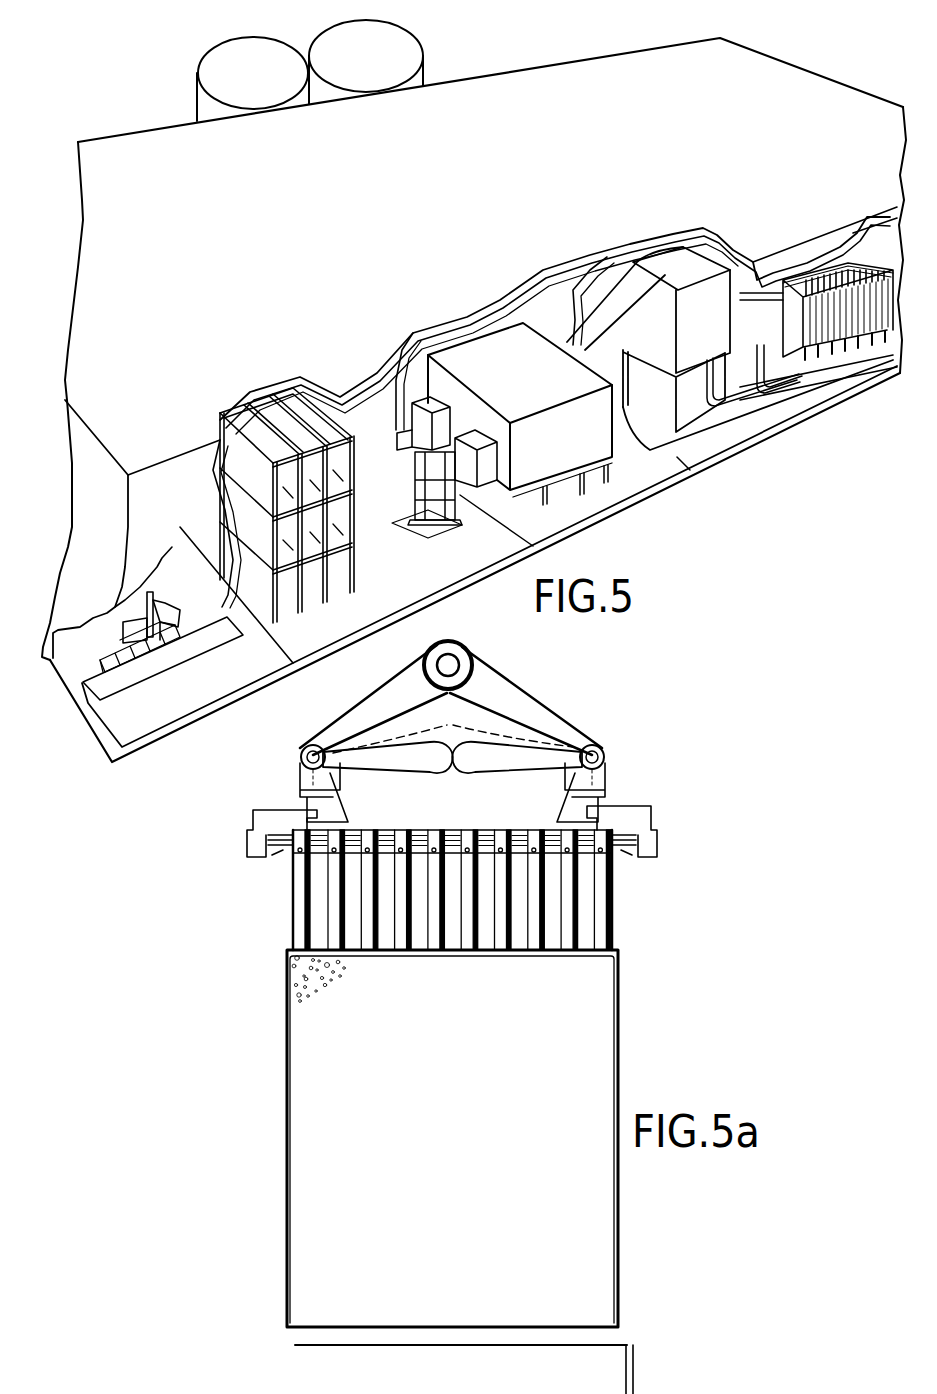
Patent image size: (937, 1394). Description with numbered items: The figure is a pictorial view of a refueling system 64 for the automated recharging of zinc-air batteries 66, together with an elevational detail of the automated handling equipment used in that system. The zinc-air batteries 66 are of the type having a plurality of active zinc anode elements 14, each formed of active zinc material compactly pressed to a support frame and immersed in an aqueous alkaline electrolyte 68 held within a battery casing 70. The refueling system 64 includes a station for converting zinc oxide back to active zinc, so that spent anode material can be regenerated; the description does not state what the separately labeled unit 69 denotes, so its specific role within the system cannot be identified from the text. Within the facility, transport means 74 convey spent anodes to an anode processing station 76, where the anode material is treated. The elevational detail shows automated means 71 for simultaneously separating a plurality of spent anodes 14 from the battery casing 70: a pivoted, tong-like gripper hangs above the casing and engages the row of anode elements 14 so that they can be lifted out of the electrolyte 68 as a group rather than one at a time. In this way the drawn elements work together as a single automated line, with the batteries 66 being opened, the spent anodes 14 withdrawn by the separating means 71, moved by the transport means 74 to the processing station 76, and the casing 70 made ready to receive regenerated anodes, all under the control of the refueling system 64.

In FIG. 5, the refueling system 64 is at (745, 530).
In FIG. 5, the zinc-air batteries 66 is at (135, 677).
In FIG. 5, the aqueous alkaline electrolyte 68 is at (217, 72).
In FIG. 5, the processing unit 69 is at (656, 358).
In FIG. 5a, the battery casing 70 is at (636, 1356).
In FIG. 5, the automated means for simultaneously separating spent anodes 71 is at (162, 600).
In FIG. 5a, the automated means for simultaneously separating spent anodes 71 is at (605, 759).
In FIG. 5, the transport means 74 is at (443, 518).
In FIG. 5, the anode processing station 76 is at (603, 450).
In FIG. 5a, the active zinc anode elements 14 is at (289, 979).